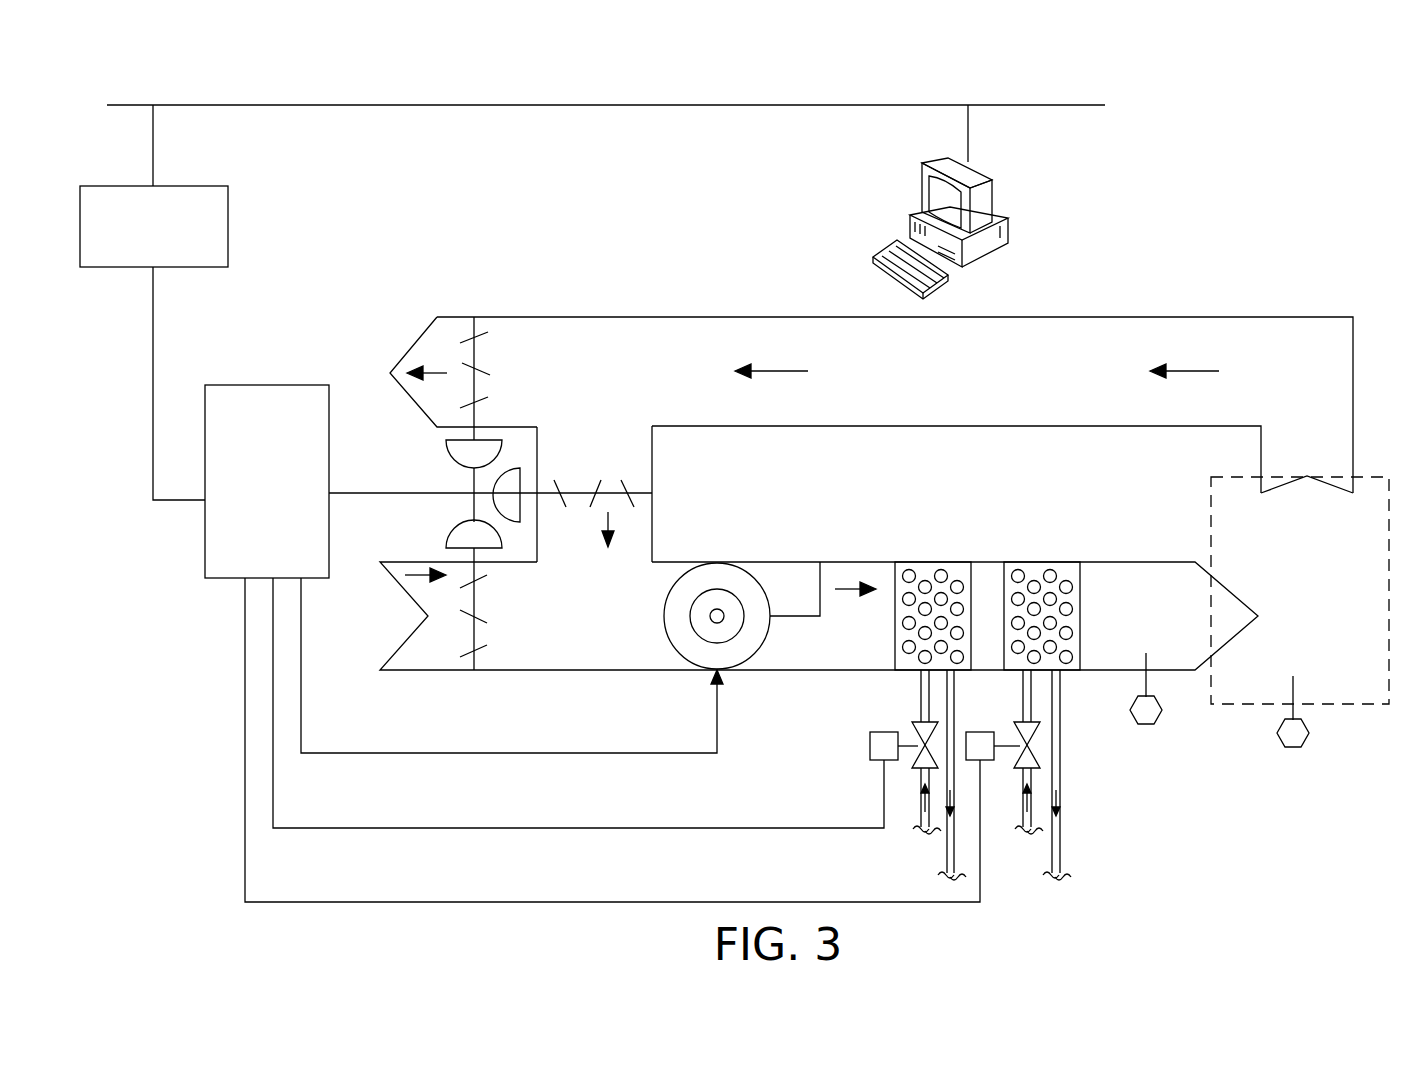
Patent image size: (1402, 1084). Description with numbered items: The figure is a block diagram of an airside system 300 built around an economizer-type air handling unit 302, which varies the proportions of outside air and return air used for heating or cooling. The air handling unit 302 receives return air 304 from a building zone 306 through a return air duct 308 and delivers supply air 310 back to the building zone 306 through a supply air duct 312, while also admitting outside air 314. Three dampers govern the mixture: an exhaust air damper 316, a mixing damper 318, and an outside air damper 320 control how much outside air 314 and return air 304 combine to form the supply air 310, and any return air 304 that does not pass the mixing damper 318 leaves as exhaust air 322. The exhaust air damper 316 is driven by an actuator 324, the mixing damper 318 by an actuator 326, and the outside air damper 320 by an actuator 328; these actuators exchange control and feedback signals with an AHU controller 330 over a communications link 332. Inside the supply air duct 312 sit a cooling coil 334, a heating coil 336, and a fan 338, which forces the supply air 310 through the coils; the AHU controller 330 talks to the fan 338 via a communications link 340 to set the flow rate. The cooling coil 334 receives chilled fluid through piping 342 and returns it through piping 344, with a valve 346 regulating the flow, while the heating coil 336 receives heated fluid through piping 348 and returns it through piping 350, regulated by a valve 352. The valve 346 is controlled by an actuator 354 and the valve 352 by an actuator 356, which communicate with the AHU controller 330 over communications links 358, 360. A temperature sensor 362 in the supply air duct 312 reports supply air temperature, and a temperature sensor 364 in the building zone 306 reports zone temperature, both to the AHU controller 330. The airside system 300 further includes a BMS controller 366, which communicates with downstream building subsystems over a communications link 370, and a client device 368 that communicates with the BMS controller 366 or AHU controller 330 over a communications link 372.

The airside system 300 is at (505, 78).
The air handling unit 302 is at (1188, 208).
The return air 304 is at (1316, 392).
The building zone 306 is at (1365, 690).
The return air duct 308 is at (1210, 317).
The supply air 310 is at (1165, 590).
The supply air duct 312 is at (1112, 562).
The outside air 314 is at (368, 656).
The exhaust air damper 316 is at (478, 356).
The mixing damper 318 is at (652, 483).
The outside air damper 320 is at (478, 631).
The exhaust air 322 is at (368, 322).
The actuator 324 is at (493, 442).
The actuator 326 is at (521, 472).
The actuator 328 is at (452, 544).
The AHU controller 330 is at (242, 385).
The communications link 332 is at (380, 493).
The cooling coil 334 is at (925, 567).
The heating coil 336 is at (1030, 567).
The fan 338 is at (762, 633).
The communications link 340 is at (527, 753).
The piping 342 is at (920, 695).
The piping 344 is at (946, 859).
The valve 346 is at (914, 723).
The piping 348 is at (1022, 695).
The piping 350 is at (1060, 844).
The valve 352 is at (1017, 723).
The actuator 354 is at (876, 752).
The actuator 356 is at (985, 760).
The communications link 358 is at (628, 828).
The communications link 360 is at (678, 902).
The temperature sensor 362 is at (1142, 727).
The temperature sensor 364 is at (1290, 749).
The BMS controller 366 is at (228, 231).
The client device 368 is at (988, 193).
The communications link 370 is at (153, 432).
The communications link 372 is at (266, 105).